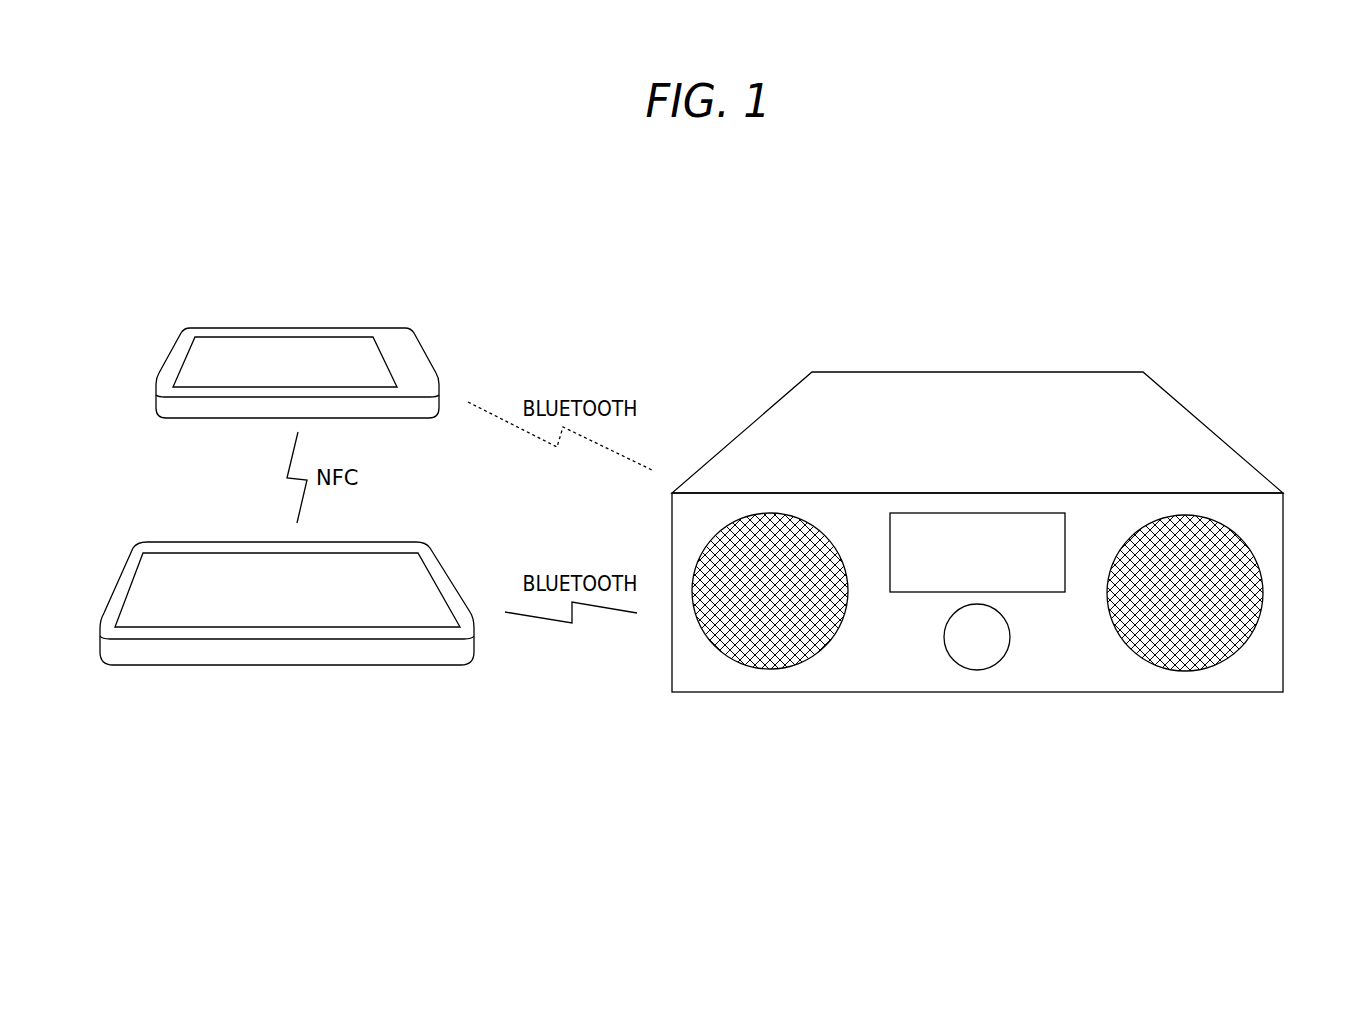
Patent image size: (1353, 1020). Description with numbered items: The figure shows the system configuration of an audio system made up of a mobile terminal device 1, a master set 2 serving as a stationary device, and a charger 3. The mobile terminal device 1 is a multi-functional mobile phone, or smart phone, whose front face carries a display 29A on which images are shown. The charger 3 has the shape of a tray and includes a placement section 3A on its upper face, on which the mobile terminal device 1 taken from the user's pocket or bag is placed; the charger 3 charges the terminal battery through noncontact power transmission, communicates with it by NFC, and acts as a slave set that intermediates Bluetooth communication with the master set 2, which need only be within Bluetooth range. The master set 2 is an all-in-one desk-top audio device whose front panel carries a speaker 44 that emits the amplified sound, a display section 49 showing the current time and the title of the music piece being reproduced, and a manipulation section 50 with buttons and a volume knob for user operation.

The mobile terminal device 1 is at (400, 329).
The display 29A is at (322, 352).
The charger 3 is at (420, 544).
The placement section 3A is at (422, 590).
The master set 2 is at (1143, 372).
The speaker 44 is at (768, 670).
The display section 49 is at (1055, 594).
The manipulation section 50 is at (976, 671).